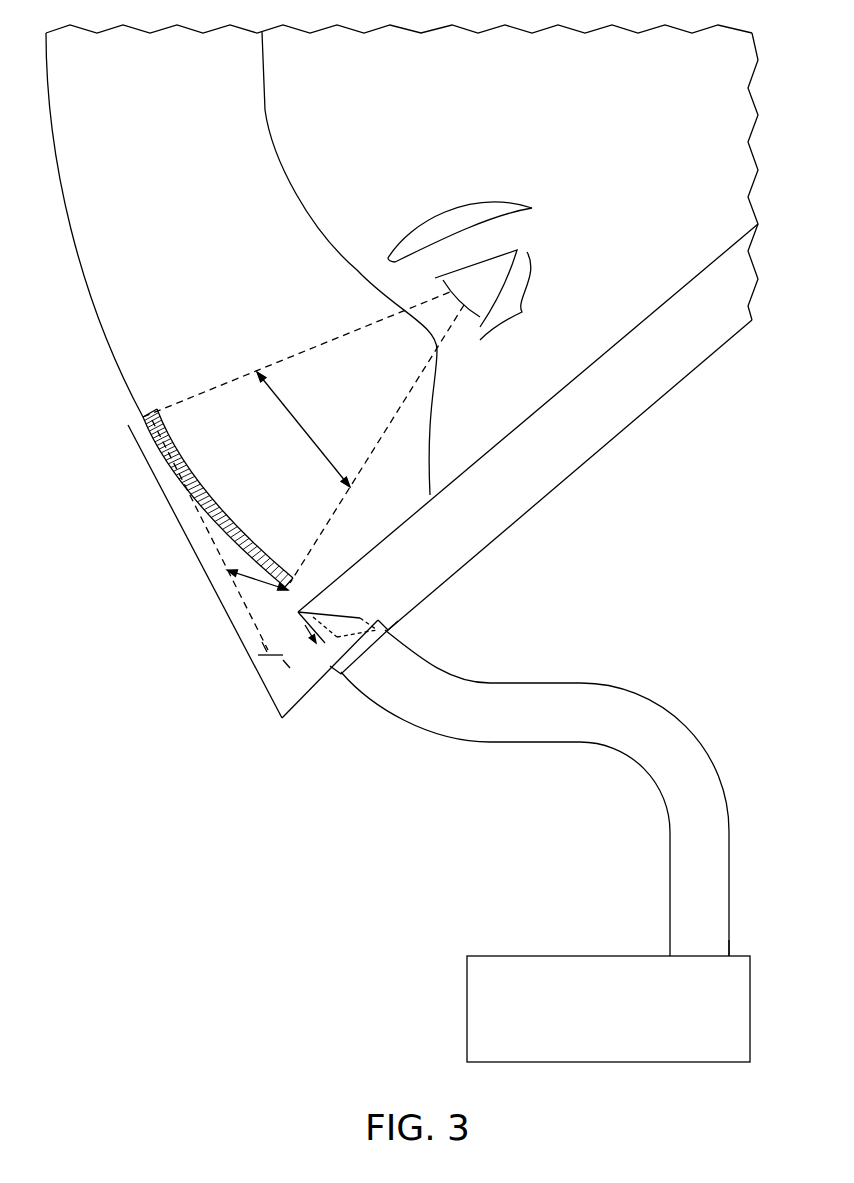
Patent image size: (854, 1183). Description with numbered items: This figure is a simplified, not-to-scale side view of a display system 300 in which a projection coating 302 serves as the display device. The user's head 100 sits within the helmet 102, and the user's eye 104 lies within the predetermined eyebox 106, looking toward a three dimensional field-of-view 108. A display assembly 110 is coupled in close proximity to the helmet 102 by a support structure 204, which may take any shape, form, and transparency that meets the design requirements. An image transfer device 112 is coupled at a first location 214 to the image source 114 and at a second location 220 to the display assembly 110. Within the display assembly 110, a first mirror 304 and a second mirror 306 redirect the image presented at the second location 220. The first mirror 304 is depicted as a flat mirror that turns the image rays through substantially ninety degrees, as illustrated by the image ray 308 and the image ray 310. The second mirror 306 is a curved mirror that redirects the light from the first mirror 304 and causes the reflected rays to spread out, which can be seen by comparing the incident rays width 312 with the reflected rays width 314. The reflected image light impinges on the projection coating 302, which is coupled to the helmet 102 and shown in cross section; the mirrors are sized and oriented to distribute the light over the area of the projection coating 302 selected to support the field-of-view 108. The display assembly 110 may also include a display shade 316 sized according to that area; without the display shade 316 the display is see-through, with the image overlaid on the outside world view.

The user's head 100 is at (265, 112).
The helmet 102 is at (64, 187).
The user's eye 104 is at (495, 262).
The predetermined eyebox 106 is at (518, 310).
The field-of-view 108 is at (300, 422).
The display assembly 110 is at (283, 718).
The image transfer device 112 is at (583, 684).
The image source 114 is at (513, 956).
The support structure 204 is at (653, 400).
The first location 214 is at (730, 952).
The second location 220 is at (388, 631).
The display system 300 is at (291, 876).
The projection coating 302 is at (179, 475).
The first mirror 304 is at (343, 612).
The second mirror 306 is at (280, 655).
The image ray 308 is at (330, 648).
The image ray 310 is at (280, 640).
The incident rays width 312 is at (283, 660).
The reflected rays width 314 is at (227, 570).
The display shade 316 is at (142, 455).